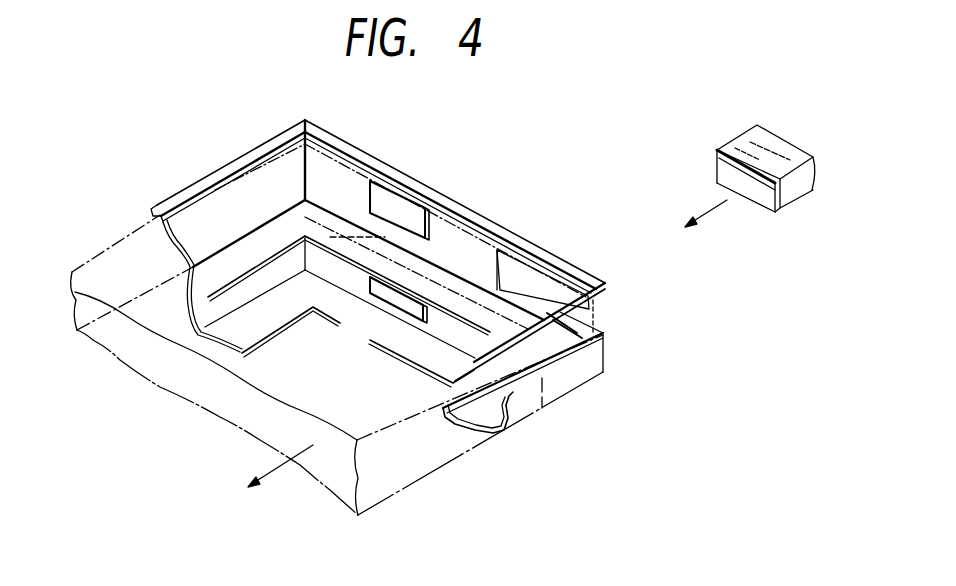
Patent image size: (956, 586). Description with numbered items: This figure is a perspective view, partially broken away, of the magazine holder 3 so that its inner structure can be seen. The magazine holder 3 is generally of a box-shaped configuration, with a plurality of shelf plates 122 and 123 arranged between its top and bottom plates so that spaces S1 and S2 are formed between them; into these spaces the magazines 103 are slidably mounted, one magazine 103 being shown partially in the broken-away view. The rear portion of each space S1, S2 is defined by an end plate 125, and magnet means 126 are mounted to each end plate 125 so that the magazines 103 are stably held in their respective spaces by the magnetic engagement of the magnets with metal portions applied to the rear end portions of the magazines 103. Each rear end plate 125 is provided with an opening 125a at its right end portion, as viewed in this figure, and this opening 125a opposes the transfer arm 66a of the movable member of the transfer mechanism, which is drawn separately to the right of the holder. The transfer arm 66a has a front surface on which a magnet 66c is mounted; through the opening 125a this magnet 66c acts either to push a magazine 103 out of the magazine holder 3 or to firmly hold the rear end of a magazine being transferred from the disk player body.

The magazine holder 3 is at (371, 195).
The magazine 103 is at (458, 460).
The shelf plate 122 is at (237, 262).
The shelf plate 123 is at (483, 409).
The end plate 125 is at (461, 237).
The opening 125a is at (533, 280).
The magnet means 126 is at (397, 207).
The transfer arm 66a is at (764, 192).
The magnet 66c is at (764, 200).
The space S1 is at (351, 205).
The space S2 is at (374, 332).